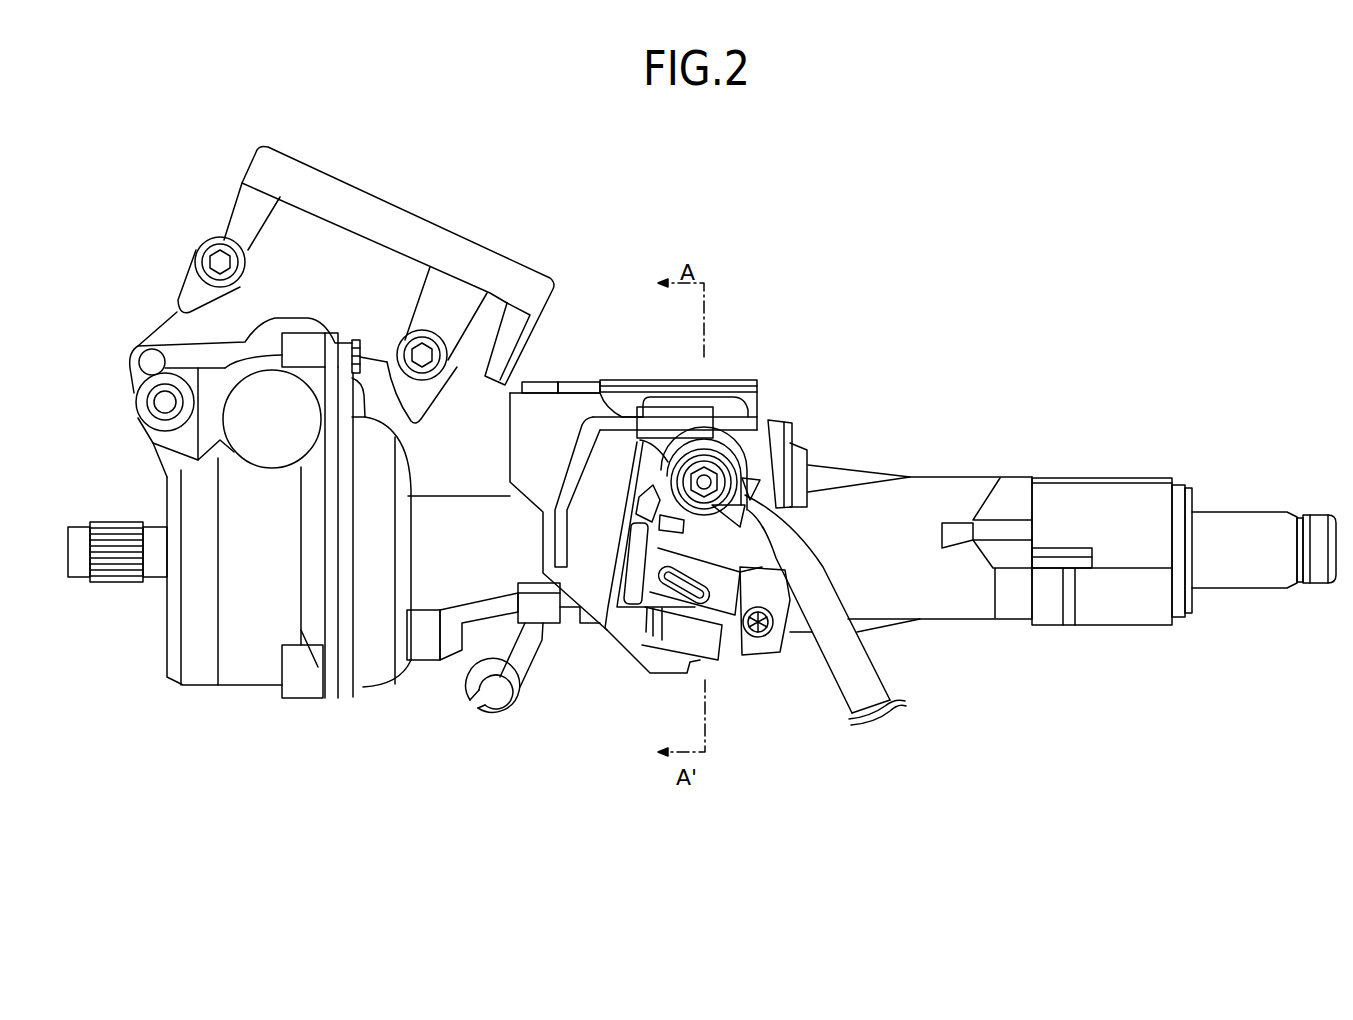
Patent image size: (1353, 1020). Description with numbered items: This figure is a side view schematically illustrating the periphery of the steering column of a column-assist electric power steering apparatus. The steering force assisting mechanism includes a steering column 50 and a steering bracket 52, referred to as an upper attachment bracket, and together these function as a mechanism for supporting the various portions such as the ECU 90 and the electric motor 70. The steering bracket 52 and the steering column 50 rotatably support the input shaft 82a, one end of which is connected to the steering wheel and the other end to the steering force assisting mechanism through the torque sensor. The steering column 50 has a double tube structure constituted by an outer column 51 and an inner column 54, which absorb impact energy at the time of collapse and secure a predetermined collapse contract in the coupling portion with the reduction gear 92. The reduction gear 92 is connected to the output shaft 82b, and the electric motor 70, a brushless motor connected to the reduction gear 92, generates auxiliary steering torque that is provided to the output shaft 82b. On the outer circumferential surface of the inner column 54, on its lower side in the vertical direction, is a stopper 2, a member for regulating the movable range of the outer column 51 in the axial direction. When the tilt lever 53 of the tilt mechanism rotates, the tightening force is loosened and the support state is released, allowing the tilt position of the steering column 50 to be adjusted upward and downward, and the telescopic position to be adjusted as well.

The stopper 2 is at (531, 691).
The steering column 50 is at (877, 433).
The outer column 51 is at (960, 490).
The steering bracket 52 is at (650, 380).
The tilt lever 53 is at (853, 688).
The inner column 54 is at (428, 598).
The electric motor 70 is at (135, 351).
The input shaft 82a is at (1246, 524).
The output shaft 82b is at (157, 573).
The ECU 90 is at (413, 210).
The reduction gear 92 is at (250, 693).